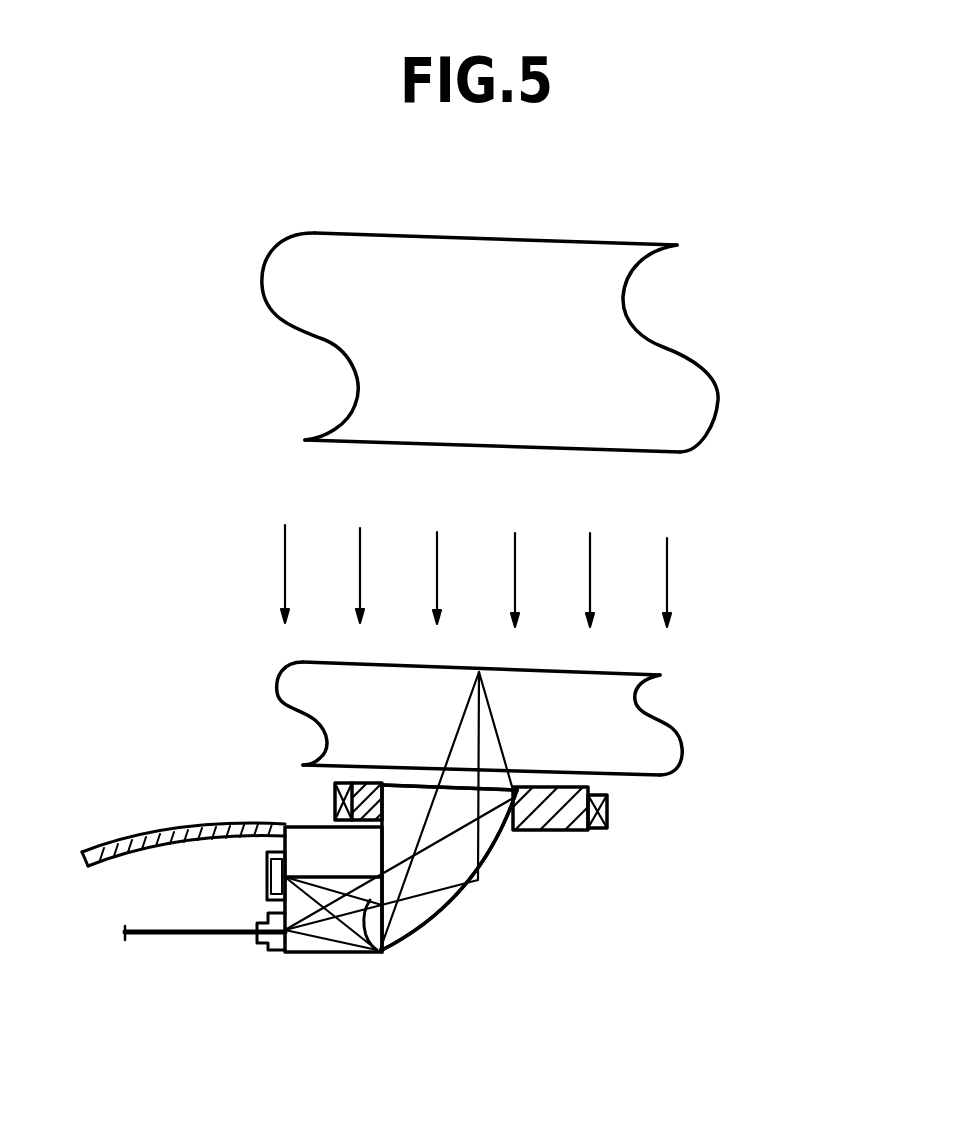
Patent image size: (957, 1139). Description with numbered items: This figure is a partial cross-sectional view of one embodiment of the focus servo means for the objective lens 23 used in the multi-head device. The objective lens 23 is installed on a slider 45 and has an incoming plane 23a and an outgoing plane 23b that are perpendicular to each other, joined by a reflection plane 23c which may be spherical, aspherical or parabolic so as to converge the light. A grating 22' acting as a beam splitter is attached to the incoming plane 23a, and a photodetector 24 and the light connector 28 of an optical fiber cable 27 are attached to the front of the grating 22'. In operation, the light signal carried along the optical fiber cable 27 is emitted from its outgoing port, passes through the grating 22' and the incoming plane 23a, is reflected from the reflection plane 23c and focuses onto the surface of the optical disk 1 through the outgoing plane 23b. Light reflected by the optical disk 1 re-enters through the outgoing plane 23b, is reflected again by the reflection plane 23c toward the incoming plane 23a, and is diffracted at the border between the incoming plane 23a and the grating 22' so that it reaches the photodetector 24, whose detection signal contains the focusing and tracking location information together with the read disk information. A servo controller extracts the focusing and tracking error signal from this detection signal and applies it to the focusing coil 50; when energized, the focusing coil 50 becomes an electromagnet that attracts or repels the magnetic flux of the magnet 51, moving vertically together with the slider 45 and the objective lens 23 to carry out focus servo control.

The magnet 51 is at (683, 402).
The optical disk 1 is at (648, 748).
The objective lens 23 is at (463, 910).
The incoming plane 23a is at (372, 950).
The outgoing plane 23b is at (420, 785).
The reflection plane 23c is at (490, 850).
The slider 45 is at (580, 830).
The focusing coil 50 is at (607, 805).
The grating 22' is at (333, 964).
The photodetector 24 is at (267, 870).
The light connector 28 is at (265, 948).
The optical fiber cable 27 is at (153, 940).